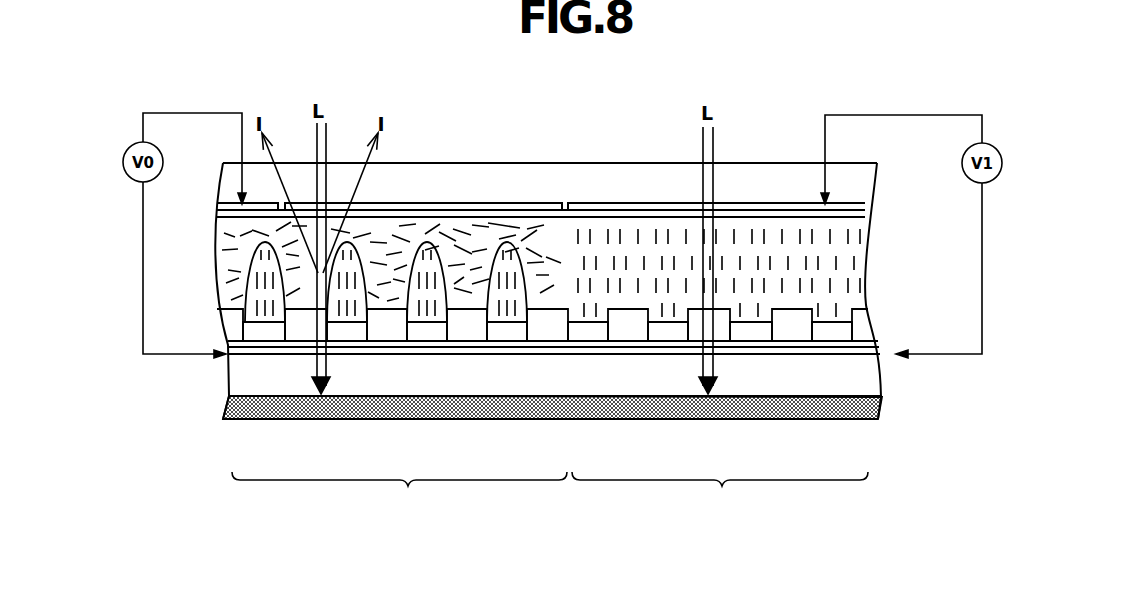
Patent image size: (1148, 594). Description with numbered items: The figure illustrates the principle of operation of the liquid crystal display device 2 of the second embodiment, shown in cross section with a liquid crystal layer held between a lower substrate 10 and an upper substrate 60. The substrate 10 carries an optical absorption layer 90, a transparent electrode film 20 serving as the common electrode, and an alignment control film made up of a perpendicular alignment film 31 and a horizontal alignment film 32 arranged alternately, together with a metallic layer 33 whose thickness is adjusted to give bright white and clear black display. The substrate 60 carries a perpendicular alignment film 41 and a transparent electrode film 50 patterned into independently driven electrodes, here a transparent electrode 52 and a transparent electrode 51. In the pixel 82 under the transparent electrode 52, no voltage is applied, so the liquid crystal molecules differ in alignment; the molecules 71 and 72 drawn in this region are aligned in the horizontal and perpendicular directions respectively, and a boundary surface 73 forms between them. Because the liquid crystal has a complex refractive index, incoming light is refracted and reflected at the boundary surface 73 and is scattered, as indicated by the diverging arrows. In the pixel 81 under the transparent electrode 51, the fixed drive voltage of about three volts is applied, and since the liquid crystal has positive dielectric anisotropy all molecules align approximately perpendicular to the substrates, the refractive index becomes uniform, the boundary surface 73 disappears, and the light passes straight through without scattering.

The liquid crystal display device 2 is at (595, 366).
The substrate 10 is at (863, 383).
The transparent electrode film 20 is at (862, 357).
The perpendicular alignment film 31 is at (463, 328).
The horizontal alignment film 32 is at (433, 330).
The metallic layer 33 is at (862, 342).
The perpendicular alignment film 41 is at (840, 215).
The transparent electrode film 50 is at (858, 208).
The transparent electrode 51 is at (765, 203).
The transparent electrode 52 is at (545, 203).
The substrate 60 is at (848, 187).
The liquid crystal layer 71 is at (463, 242).
The liquid crystal molecules 72 is at (512, 245).
The boundary surface 73 is at (432, 242).
The pixel 81 is at (720, 497).
The pixel 82 is at (399, 496).
The optical absorption layer 90 is at (862, 412).